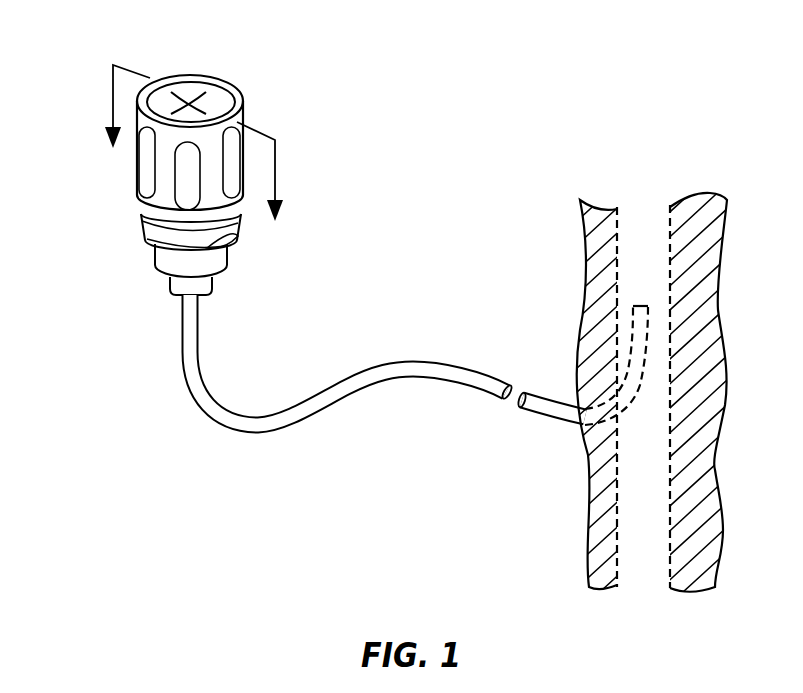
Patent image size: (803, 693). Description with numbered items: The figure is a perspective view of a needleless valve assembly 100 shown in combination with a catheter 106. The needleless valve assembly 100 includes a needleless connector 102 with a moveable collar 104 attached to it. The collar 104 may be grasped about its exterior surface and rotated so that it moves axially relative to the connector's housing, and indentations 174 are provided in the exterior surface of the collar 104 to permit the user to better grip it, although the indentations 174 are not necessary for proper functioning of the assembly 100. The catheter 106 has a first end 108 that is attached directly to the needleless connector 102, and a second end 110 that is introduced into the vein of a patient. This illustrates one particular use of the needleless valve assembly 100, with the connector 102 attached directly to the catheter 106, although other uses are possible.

The needleless valve assembly 100 is at (143, 43).
The needleless connector 102 is at (234, 228).
The moveable collar 104 is at (237, 100).
The indentations 174 is at (150, 193).
The first end 108 is at (192, 312).
The catheter 106 is at (403, 370).
The second end 110 is at (625, 316).